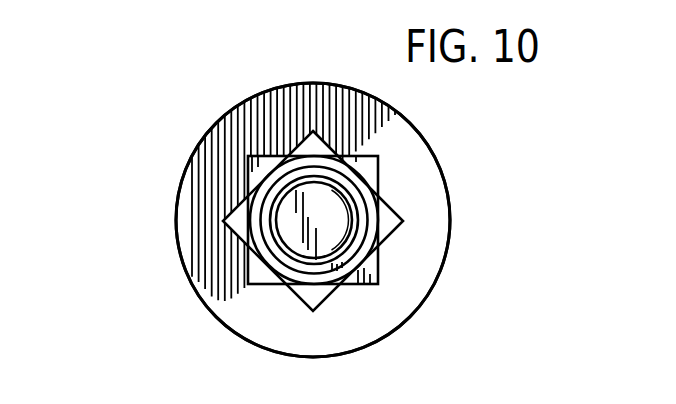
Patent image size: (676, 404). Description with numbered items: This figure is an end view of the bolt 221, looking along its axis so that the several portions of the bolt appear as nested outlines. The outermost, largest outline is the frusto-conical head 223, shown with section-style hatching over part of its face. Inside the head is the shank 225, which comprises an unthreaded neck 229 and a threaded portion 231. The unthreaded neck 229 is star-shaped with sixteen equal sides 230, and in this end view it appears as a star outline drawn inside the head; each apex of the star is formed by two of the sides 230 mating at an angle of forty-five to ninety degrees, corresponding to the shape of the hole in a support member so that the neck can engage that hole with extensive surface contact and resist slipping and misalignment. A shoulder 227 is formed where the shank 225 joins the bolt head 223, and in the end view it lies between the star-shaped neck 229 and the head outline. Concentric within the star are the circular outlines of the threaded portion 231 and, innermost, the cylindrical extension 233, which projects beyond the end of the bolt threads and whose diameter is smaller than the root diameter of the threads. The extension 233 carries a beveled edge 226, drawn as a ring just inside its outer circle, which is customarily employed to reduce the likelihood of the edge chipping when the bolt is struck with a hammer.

The bolt 221 is at (170, 159).
The frusto-conical head 223 is at (270, 88).
The shank 225 is at (255, 232).
The beveled edge 226 is at (290, 260).
The shoulder 227 is at (422, 178).
The unthreaded neck 229 is at (393, 210).
The equal sides 230 is at (323, 300).
The threaded portion 231 is at (270, 255).
The cylindrical extension 233 is at (333, 203).